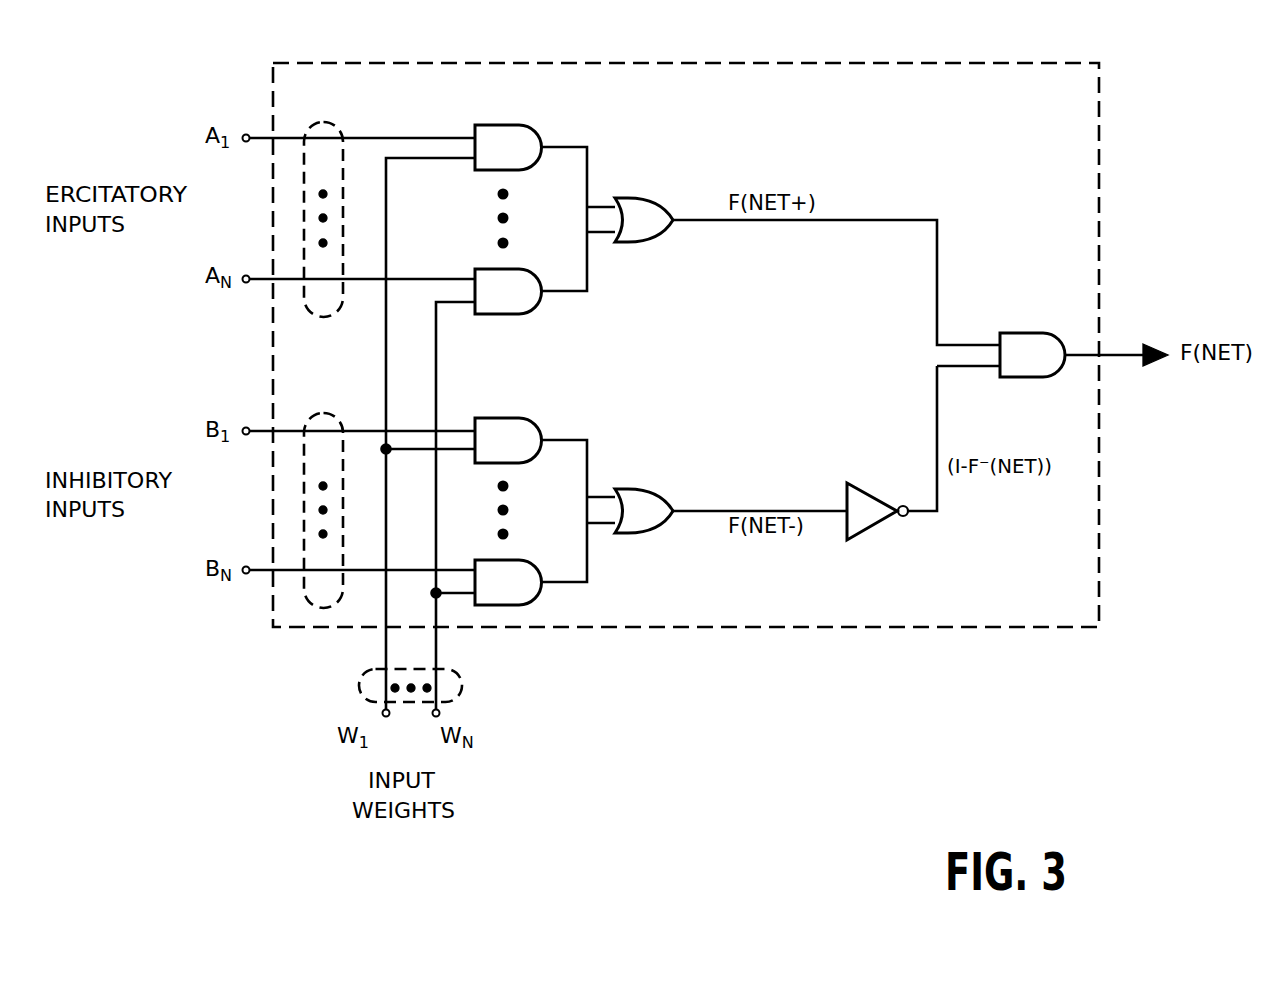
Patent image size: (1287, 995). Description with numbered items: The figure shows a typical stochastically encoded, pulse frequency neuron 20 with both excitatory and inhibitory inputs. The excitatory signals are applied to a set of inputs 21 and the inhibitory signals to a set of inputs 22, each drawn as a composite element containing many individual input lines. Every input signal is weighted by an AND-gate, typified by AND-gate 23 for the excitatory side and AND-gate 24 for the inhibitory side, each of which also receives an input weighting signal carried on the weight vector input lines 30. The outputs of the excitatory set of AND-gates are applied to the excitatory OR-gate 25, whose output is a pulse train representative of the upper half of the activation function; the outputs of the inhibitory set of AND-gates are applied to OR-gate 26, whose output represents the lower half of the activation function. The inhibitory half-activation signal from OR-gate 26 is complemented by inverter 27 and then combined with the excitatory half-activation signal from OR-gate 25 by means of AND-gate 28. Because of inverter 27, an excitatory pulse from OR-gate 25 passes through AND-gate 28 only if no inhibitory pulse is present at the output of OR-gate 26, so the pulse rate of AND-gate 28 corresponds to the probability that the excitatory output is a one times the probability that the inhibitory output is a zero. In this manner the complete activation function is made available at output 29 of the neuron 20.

The neuron 20 is at (1101, 561).
The excitatory inputs 21 is at (333, 120).
The inhibitory inputs 22 is at (323, 412).
The AND-gate 23 is at (528, 125).
The AND-gate 24 is at (523, 418).
The excitatory OR-gate 25 is at (640, 200).
The OR-gate 26 is at (640, 490).
The inverter 27 is at (855, 485).
The AND-gate 28 is at (1025, 333).
The output 29 is at (1113, 357).
The weight vector input lines 30 is at (455, 672).